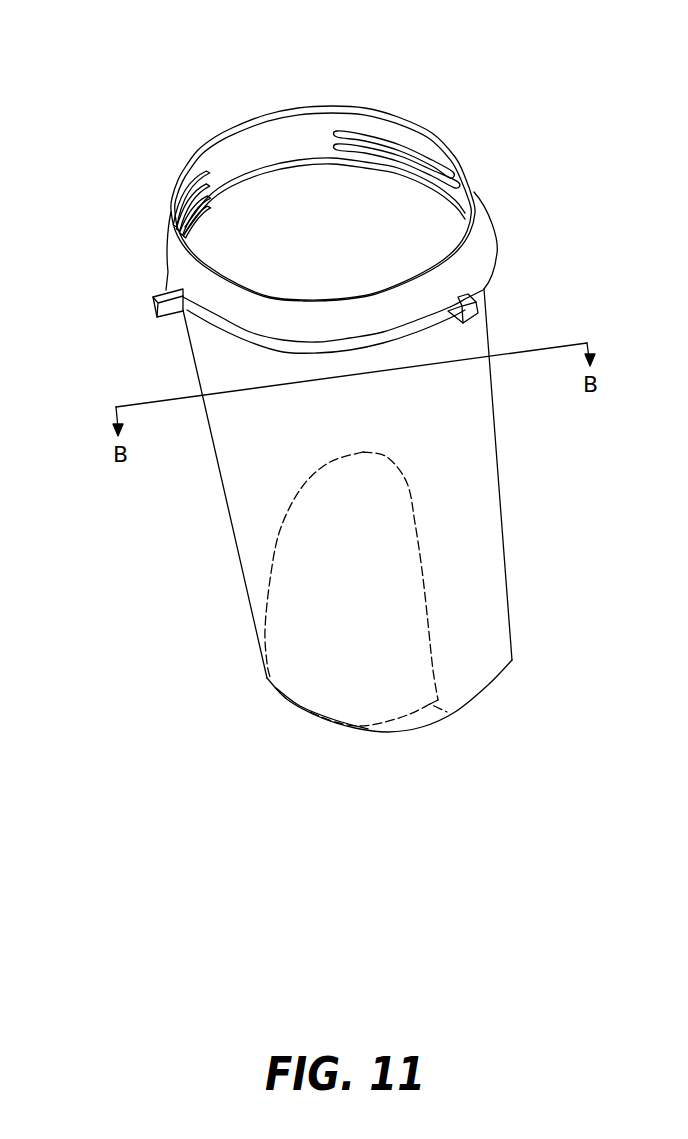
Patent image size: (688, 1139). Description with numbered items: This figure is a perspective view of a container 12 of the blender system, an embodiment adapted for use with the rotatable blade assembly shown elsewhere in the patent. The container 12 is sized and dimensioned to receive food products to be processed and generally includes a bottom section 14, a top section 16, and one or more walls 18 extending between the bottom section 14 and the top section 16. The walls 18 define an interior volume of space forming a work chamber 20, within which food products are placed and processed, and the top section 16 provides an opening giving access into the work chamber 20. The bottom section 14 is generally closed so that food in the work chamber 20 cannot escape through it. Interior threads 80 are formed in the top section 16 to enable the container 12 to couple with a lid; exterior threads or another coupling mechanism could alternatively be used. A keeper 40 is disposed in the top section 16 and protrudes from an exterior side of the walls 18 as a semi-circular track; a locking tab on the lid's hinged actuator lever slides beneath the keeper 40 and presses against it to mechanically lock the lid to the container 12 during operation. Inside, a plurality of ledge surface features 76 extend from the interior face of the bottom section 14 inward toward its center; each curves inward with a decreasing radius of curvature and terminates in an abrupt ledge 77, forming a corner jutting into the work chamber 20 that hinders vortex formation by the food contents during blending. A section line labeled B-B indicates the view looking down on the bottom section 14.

The container 12 is at (102, 70).
The bottom section 14 is at (535, 587).
The top section 16 is at (523, 138).
The walls 18 is at (492, 412).
The work chamber 20 is at (332, 253).
The keeper 40 is at (153, 312).
The ledge surface features 76 is at (370, 729).
The abrupt ledge 77 is at (367, 452).
The interior threads 80 is at (394, 140).